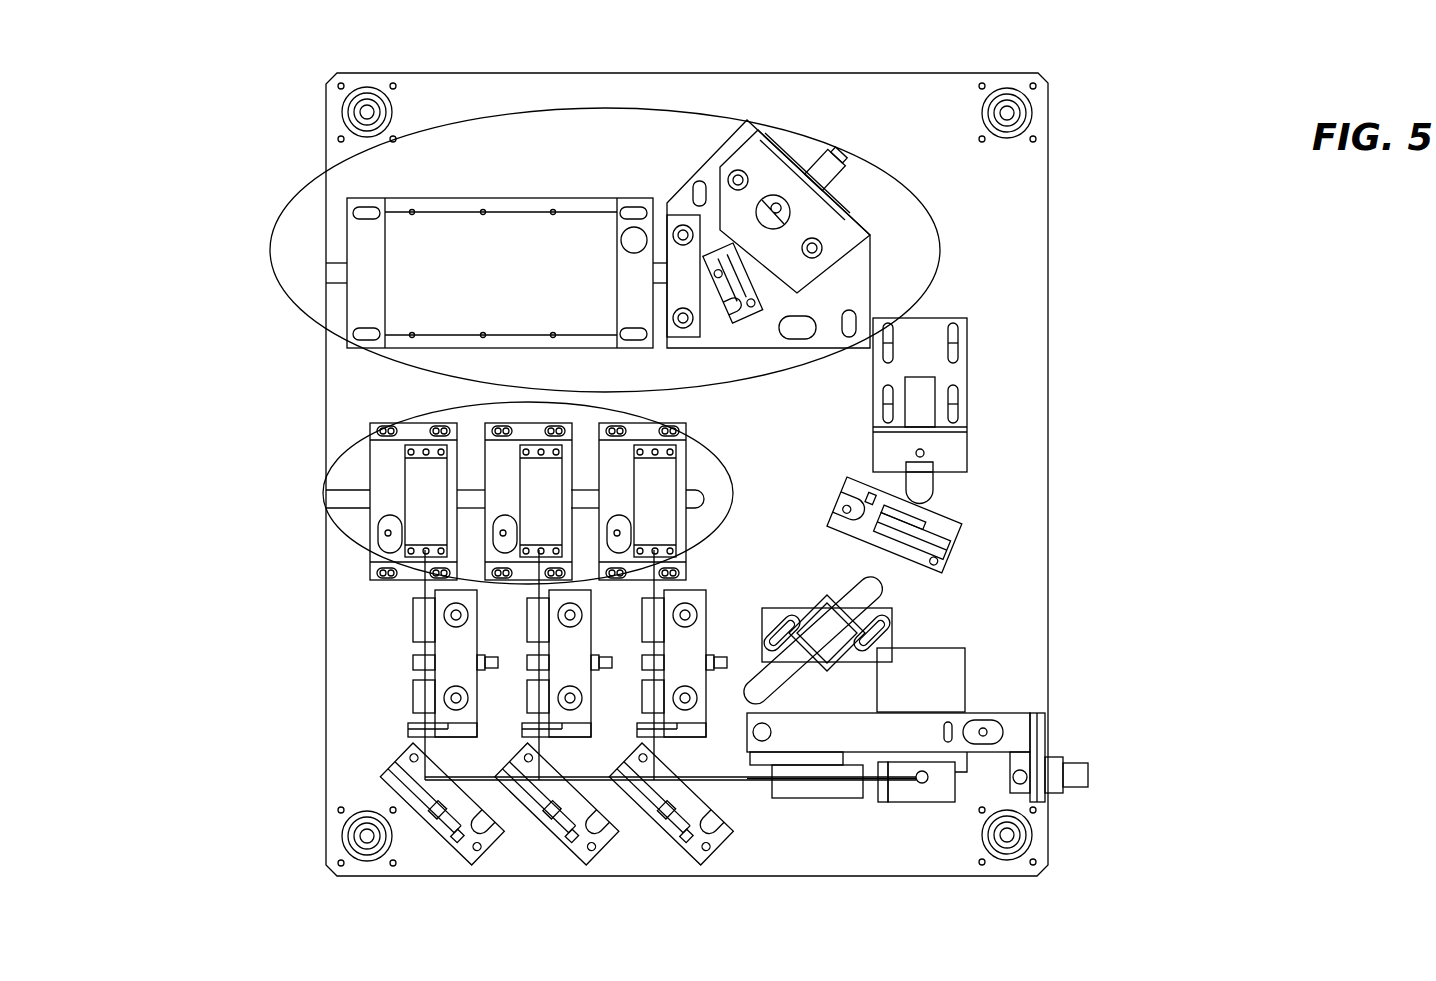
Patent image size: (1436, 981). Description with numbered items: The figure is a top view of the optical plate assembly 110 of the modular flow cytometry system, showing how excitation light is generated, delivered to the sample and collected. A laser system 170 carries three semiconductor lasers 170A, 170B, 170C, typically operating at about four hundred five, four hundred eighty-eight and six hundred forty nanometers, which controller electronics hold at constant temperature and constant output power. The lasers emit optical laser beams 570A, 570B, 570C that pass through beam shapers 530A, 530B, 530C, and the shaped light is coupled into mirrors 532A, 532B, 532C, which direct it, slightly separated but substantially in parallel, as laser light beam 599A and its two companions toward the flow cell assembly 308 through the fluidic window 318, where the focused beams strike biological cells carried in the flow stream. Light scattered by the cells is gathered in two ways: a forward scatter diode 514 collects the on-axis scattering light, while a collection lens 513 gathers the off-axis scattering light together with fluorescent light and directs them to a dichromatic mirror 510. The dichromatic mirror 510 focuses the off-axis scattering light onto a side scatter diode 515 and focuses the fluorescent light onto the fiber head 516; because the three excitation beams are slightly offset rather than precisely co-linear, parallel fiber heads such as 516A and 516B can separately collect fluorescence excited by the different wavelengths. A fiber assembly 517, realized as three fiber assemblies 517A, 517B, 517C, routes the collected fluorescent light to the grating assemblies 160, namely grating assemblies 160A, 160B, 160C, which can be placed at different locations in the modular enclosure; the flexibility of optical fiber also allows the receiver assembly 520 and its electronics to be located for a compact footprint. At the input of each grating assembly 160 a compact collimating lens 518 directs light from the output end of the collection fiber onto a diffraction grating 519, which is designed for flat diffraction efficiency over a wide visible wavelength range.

The optical plate assembly 110 is at (1043, 77).
The grating assembly 160 is at (277, 218).
The grating assembly 160A is at (412, 274).
The grating assembly 160B is at (483, 274).
The grating assembly 160C is at (553, 274).
The receiver assembly 520 is at (500, 184).
The compact collimating lens 518 is at (782, 178).
The diffraction grating 519 is at (717, 273).
The fiber assembly 517 is at (1104, 377).
The fiber assembly 517A is at (888, 373).
The fiber assembly 517B is at (953, 373).
The fiber assembly 517C is at (920, 453).
The fiber head 516 is at (1114, 440).
The fiber head 516A is at (920, 402).
The fiber head 516B is at (919, 483).
The dichromatic mirror 510 is at (962, 530).
The laser system 170 is at (355, 447).
The semiconductor laser 170A is at (432, 474).
The semiconductor laser 170B is at (537, 465).
The semiconductor laser 170C is at (657, 474).
The optical laser beam 570A is at (423, 587).
The optical laser beam 570B is at (540, 590).
The optical laser beam 570C is at (655, 587).
The beam shaper 530A is at (413, 663).
The beam shaper 530B is at (532, 655).
The beam shaper 530C is at (640, 653).
The mirror 532A is at (432, 827).
The mirror 532B is at (546, 827).
The mirror 532C is at (661, 827).
The laser light beam 599A is at (763, 778).
The side scatter diode 515 is at (842, 630).
The collection lens 513 is at (967, 685).
The flow cell assembly 308 is at (937, 800).
The fluidic window 318 is at (880, 792).
The forward scatter diode 514 is at (1088, 772).